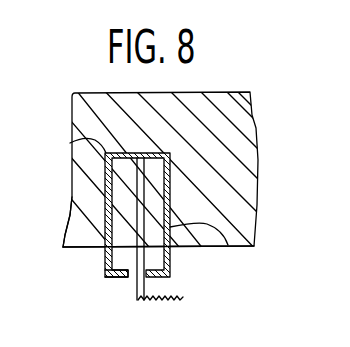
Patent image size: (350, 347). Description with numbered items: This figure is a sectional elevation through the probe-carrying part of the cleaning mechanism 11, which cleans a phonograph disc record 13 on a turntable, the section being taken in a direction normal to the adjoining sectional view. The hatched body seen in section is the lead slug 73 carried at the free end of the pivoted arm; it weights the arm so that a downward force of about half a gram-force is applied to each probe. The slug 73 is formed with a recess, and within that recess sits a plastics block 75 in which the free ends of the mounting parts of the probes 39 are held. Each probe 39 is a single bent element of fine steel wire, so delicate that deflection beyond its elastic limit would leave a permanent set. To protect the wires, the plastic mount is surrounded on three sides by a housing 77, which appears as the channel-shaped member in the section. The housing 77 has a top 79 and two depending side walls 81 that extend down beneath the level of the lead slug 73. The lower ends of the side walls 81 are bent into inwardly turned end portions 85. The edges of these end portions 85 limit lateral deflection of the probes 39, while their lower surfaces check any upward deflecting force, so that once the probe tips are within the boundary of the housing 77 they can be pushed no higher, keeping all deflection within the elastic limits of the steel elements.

The cleaning mechanism 11 is at (43, 177).
The phonograph disc record 13 is at (144, 300).
The probes 39 is at (173, 273).
The lead slug 73 is at (80, 118).
The plastics block 75 is at (227, 246).
The housing 77 is at (86, 216).
The top 79 is at (70, 143).
The side walls 81 is at (72, 197).
The inwardly turned end portions 85 is at (137, 290).